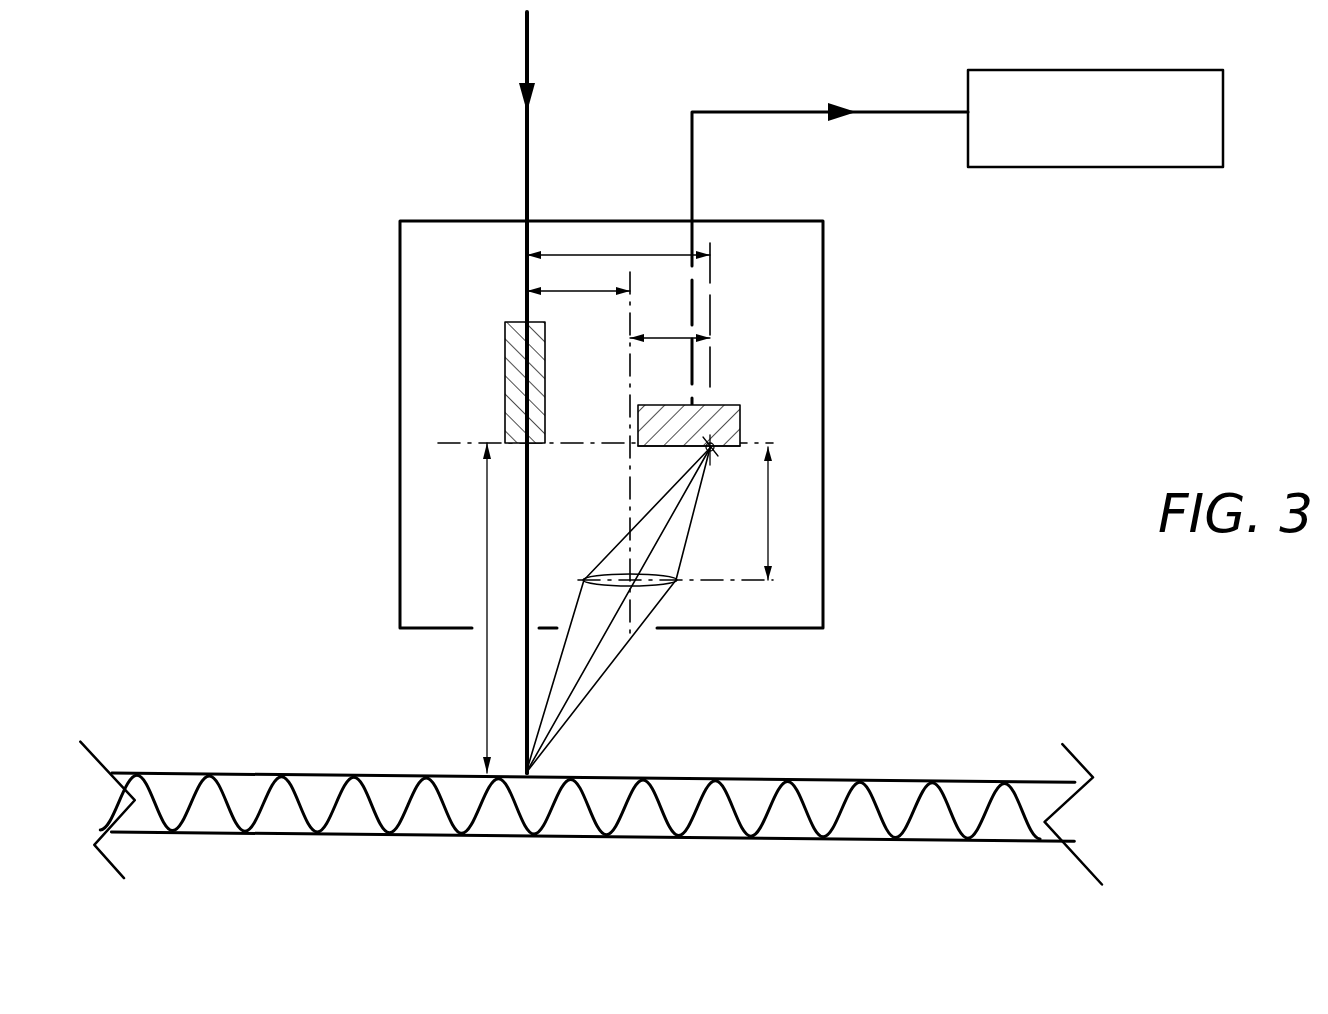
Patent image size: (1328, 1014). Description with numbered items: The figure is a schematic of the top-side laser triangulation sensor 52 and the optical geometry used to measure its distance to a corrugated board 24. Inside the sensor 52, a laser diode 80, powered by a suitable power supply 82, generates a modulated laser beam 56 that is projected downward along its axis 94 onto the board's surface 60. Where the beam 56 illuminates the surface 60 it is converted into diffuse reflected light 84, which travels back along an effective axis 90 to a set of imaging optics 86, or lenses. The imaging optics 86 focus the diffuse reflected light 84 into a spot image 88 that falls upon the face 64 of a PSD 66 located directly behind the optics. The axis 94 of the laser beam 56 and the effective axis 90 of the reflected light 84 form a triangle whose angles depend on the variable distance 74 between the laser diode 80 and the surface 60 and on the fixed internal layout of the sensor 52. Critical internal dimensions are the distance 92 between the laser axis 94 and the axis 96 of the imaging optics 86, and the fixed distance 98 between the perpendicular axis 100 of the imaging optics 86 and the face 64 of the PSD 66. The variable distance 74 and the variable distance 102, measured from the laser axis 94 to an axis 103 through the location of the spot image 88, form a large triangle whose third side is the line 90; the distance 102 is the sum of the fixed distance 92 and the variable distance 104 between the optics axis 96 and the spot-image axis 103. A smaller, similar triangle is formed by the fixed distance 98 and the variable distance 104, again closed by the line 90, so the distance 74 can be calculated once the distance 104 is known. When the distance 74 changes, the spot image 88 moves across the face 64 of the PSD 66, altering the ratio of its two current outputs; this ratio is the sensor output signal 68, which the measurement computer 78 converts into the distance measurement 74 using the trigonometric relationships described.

The board 24 is at (245, 800).
The laser triangulation sensor 52 is at (823, 280).
The laser beam 56 is at (524, 658).
The surface 60 is at (910, 782).
The face 64 is at (660, 452).
The PSD 66 is at (727, 405).
The sensor output signal 68 is at (758, 112).
The distance 74 is at (486, 700).
The measurement computer 78 is at (1095, 118).
The laser diode 80 is at (505, 350).
The power supply 82 is at (529, 62).
The diffuse reflected light 84 is at (550, 700).
The imaging optics 86 is at (647, 585).
The spot image 88 is at (714, 458).
The effective axis 90 is at (615, 658).
The distance 92 is at (577, 292).
The axis 94 is at (525, 402).
The axis 96 is at (630, 385).
The distance 98 is at (770, 510).
The perpendicular axis 100 is at (752, 585).
The distance 102 is at (596, 228).
The axis 103 is at (713, 278).
The distance 104 is at (685, 337).